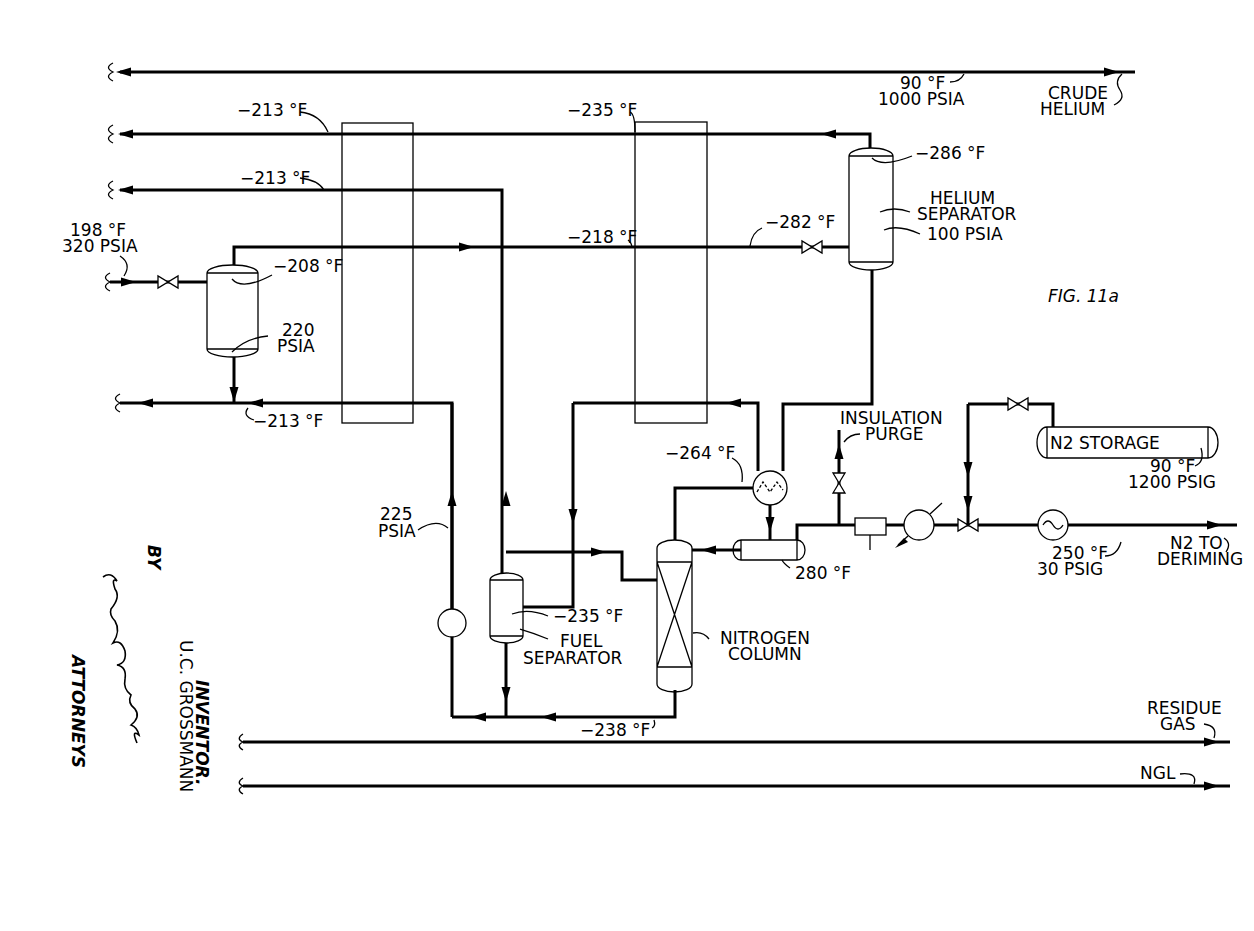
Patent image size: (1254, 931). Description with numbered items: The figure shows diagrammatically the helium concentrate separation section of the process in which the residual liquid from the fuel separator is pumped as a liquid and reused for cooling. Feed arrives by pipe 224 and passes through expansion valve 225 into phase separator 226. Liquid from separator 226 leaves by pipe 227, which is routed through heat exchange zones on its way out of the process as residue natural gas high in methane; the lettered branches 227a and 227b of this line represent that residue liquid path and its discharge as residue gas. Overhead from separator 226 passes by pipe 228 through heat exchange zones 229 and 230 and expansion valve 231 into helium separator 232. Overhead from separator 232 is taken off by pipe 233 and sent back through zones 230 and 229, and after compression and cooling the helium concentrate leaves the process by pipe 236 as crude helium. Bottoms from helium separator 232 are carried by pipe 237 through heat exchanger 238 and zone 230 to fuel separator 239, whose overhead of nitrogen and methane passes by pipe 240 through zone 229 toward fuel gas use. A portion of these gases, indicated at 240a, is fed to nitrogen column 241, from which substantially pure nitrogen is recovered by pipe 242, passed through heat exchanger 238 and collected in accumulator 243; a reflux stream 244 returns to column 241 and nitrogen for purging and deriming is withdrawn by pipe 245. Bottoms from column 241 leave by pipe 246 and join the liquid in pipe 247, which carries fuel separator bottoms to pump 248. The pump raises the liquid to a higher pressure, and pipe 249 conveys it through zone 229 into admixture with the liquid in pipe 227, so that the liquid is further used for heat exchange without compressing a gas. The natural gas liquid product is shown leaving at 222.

The NGL line 222 is at (944, 782).
The pipe 224 is at (150, 280).
The expansion valve 225 is at (174, 288).
The phase separator 226 is at (232, 311).
The pipe 227 is at (240, 368).
The liquid line 227a is at (166, 400).
The residue gas line 227b is at (1066, 743).
The pipe 228 is at (240, 246).
The heat exchange zone 229 is at (377, 273).
The heat exchange zone 230 is at (671, 272).
The expansion valve 231 is at (816, 253).
The helium separator 232 is at (871, 209).
The pipe 233 is at (202, 136).
The pipe 236 is at (184, 70).
The pipe 237 is at (878, 280).
The heat exchanger 238 is at (790, 474).
The fuel separator 239 is at (515, 593).
The pipe 240 is at (196, 186).
The liquid line 240a is at (504, 570).
The nitrogen column 241 is at (694, 594).
The pipe 242 is at (676, 518).
The accumulator 243 is at (806, 556).
The reflux stream 244 is at (732, 534).
The pipe 245 is at (826, 520).
The pipe 246 is at (678, 712).
The pipe 247 is at (456, 647).
The pump 248 is at (450, 613).
The pipe 249 is at (450, 553).